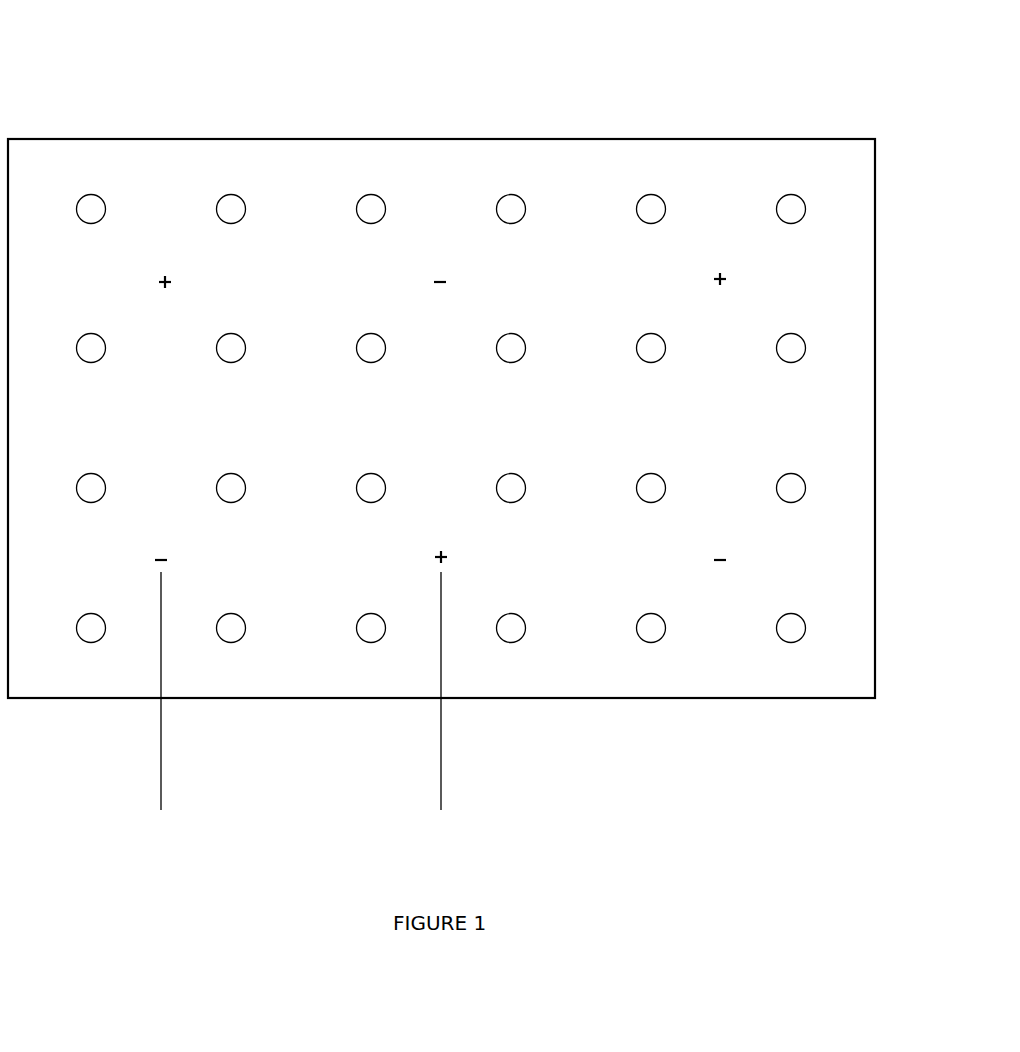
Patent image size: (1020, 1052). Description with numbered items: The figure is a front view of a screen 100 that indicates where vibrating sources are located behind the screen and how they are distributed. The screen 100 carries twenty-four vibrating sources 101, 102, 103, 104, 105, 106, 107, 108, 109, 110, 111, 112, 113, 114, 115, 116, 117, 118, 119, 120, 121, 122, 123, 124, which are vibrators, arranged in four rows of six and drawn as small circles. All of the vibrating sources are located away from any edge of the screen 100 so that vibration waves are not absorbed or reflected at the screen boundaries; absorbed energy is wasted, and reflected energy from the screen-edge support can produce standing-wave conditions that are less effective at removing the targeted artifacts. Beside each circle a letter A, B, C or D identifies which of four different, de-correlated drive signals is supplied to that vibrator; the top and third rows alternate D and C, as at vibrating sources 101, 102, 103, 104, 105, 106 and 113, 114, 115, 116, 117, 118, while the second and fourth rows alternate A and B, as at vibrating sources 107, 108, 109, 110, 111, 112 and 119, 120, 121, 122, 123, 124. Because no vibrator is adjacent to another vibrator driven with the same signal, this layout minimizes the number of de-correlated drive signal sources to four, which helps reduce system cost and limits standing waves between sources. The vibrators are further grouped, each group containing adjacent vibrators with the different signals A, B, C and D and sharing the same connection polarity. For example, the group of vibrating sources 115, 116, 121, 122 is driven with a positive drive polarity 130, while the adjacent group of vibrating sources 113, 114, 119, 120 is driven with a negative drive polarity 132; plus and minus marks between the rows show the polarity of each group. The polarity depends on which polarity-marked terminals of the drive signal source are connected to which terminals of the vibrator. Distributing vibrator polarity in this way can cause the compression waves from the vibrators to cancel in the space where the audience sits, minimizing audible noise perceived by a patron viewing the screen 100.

The screen 100 is at (268, 422).
The vibrating source 101 is at (91, 209).
The vibrating source 102 is at (231, 209).
The vibrating source 103 is at (371, 209).
The vibrating source 104 is at (511, 209).
The vibrating source 105 is at (651, 209).
The vibrating source 106 is at (791, 209).
The vibrating source 107 is at (91, 348).
The vibrating source 108 is at (231, 348).
The vibrating source 109 is at (371, 348).
The vibrating source 110 is at (511, 348).
The vibrating source 111 is at (651, 348).
The vibrating source 112 is at (791, 348).
The vibrating source 113 is at (91, 488).
The vibrating source 114 is at (231, 488).
The vibrating source 115 is at (371, 488).
The vibrating source 116 is at (511, 488).
The vibrating source 117 is at (651, 488).
The vibrating source 118 is at (791, 488).
The vibrating source 119 is at (91, 628).
The vibrating source 120 is at (231, 628).
The vibrating source 121 is at (371, 628).
The vibrating source 122 is at (511, 628).
The vibrating source 123 is at (651, 628).
The vibrating source 124 is at (791, 628).
The positive drive polarity 130 is at (442, 711).
The negative drive polarity 132 is at (162, 711).